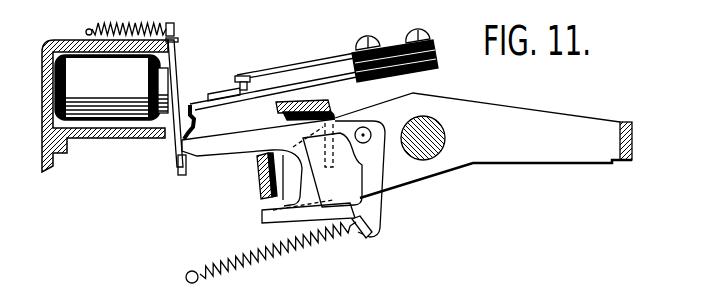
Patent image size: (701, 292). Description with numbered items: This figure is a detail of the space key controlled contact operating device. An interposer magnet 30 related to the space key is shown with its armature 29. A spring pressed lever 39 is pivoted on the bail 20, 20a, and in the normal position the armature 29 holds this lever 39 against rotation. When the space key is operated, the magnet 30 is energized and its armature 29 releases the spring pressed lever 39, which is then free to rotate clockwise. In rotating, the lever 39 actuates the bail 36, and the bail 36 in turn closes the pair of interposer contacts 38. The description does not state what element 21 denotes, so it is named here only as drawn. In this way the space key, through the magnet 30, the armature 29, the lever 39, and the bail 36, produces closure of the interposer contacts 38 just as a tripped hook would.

The bail 20 is at (633, 140).
The bail portion 20a is at (262, 185).
The pivot pin 21 is at (440, 158).
The armature 29 is at (178, 166).
The interposer magnet 30 is at (111, 87).
The bail 36 is at (195, 127).
The interposer contacts 38 is at (235, 79).
The spring pressed lever 39 is at (215, 150).